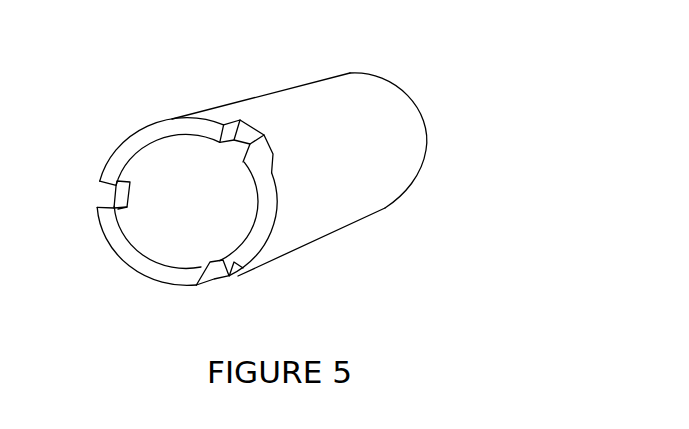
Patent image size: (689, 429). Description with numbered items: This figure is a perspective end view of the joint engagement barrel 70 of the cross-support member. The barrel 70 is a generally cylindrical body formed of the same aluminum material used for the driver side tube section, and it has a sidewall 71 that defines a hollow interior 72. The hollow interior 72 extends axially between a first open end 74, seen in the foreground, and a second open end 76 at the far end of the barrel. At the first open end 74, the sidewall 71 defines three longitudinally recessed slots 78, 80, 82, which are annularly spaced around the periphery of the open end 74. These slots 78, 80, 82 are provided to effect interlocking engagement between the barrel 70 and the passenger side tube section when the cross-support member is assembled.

The joint engagement barrel 70 is at (278, 167).
The sidewall 71 is at (368, 178).
The hollow interior 72 is at (191, 219).
The first open end 74 is at (262, 225).
The second open end 76 is at (425, 133).
The longitudinally recessed slot 78 is at (239, 135).
The longitudinally recessed slot 80 is at (217, 265).
The longitudinally recessed slot 82 is at (112, 200).